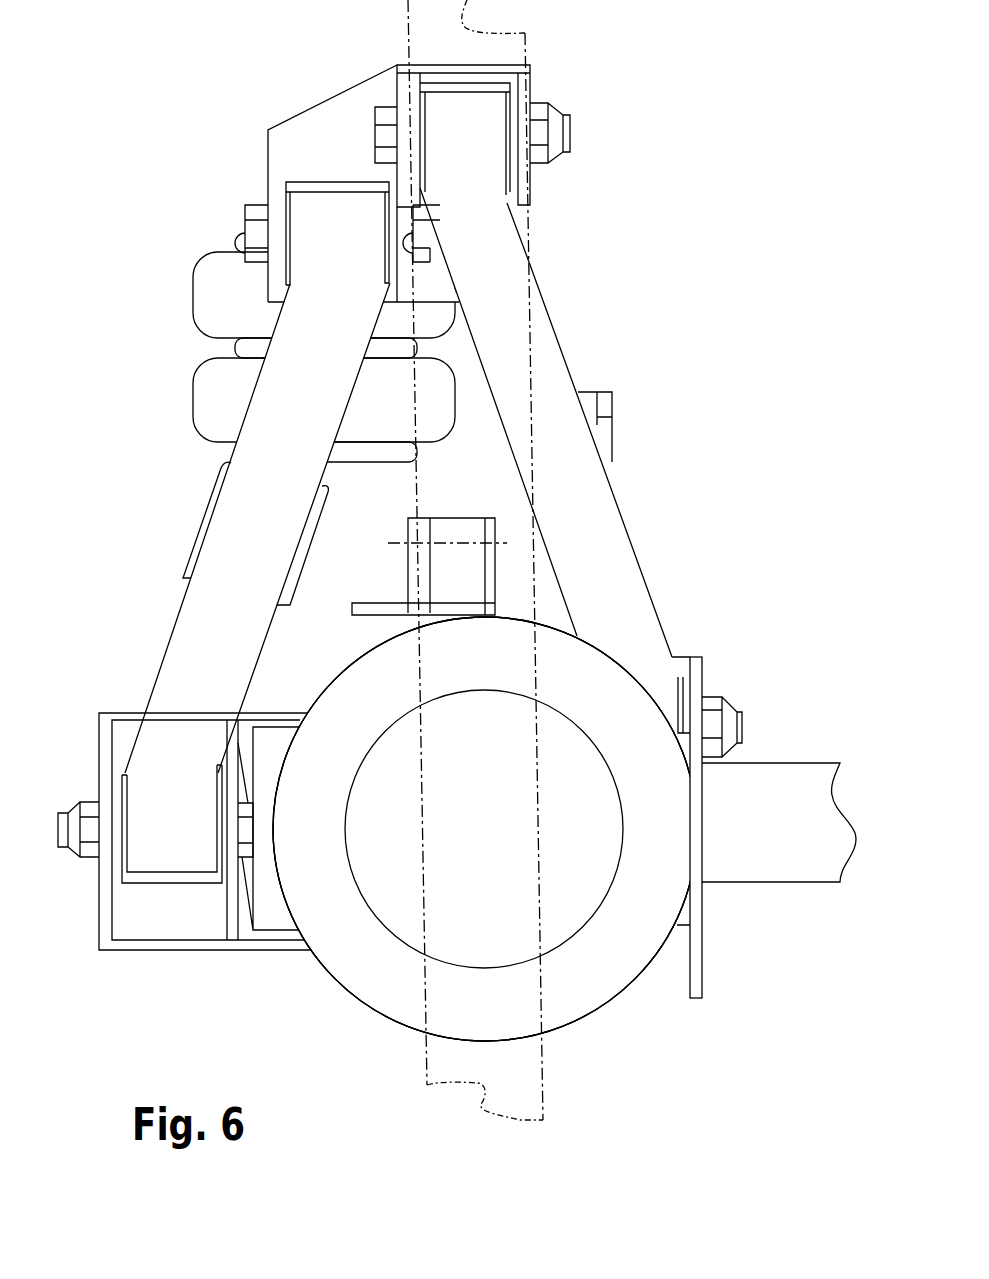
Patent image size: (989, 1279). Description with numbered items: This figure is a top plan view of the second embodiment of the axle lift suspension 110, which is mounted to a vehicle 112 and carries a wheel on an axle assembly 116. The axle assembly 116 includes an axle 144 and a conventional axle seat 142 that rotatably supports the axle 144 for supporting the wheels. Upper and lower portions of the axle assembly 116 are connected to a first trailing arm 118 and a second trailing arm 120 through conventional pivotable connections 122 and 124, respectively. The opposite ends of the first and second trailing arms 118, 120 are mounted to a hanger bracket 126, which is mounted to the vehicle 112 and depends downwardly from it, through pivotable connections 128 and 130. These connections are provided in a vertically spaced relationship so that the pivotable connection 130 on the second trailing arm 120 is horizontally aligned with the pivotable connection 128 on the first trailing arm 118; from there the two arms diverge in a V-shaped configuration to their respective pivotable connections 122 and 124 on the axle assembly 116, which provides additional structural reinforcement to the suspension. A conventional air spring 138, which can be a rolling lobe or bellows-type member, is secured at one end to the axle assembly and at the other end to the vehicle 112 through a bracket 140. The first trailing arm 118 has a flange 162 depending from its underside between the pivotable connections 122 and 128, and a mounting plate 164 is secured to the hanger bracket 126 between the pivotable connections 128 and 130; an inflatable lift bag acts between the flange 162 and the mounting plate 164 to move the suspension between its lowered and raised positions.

The axle lift suspension 110 is at (748, 458).
The vehicle 112 is at (515, 42).
The axle assembly 116 is at (314, 988).
The first trailing arm 118 is at (243, 525).
The second trailing arm 120 is at (557, 340).
The pivotable connection 122 is at (152, 788).
The pivotable connection 124 is at (655, 697).
The hanger bracket 126 is at (532, 90).
The pivotable connection 128 is at (335, 268).
The pivotable connection 130 is at (472, 158).
The air spring 138 is at (371, 979).
The bracket 140 is at (608, 841).
The axle seat 142 is at (621, 997).
The axle 144 is at (774, 865).
The flange 162 is at (187, 555).
The mounting plate 164 is at (265, 270).